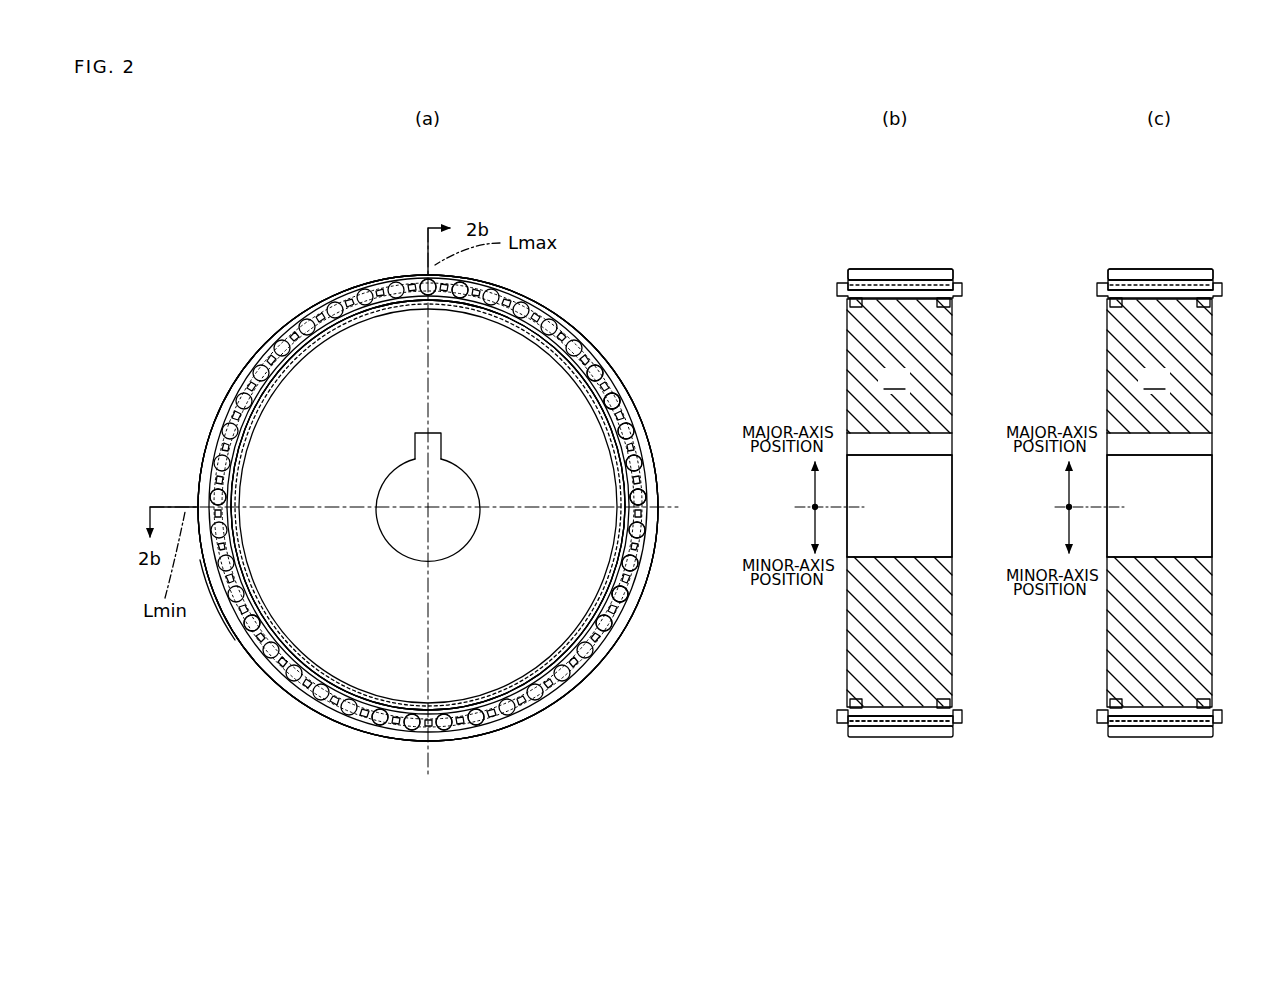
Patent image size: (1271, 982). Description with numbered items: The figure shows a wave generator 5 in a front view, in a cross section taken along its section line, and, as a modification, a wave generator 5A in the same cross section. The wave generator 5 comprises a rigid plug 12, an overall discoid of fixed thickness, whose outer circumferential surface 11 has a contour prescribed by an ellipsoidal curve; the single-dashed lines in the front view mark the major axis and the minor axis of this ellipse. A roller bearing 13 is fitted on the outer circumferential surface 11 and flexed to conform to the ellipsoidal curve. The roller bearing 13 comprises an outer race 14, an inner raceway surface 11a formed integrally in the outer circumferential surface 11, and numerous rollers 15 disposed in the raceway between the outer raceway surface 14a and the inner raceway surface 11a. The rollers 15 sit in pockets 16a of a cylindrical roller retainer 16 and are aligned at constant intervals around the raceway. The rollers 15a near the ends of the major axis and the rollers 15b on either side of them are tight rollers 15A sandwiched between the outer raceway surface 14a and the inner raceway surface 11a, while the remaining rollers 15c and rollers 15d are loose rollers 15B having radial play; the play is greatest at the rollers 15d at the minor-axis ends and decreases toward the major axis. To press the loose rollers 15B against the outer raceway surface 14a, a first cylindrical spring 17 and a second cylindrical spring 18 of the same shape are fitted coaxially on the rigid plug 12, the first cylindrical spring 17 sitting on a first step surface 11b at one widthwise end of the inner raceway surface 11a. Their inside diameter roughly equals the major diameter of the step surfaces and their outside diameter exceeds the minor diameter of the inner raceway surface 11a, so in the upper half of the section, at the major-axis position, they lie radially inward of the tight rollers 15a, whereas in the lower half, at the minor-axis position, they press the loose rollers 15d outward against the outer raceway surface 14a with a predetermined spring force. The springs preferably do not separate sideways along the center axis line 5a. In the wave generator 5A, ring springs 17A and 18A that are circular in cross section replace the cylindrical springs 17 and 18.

The wave generator 5 is at (266, 262).
The wave generator 5A is at (1117, 247).
The center axis line 5a is at (933, 520).
The outer circumferential surface 11 is at (186, 262).
The inner raceway surface 11a is at (307, 312).
The first step surface 11b is at (303, 343).
The rigid plug 12 is at (297, 392).
The roller bearing 13 is at (206, 403).
The outer race 14 is at (213, 433).
The outer raceway surface 14a is at (227, 588).
The rollers 15 is at (217, 463).
The rollers 15a is at (426, 283).
The rollers 15b is at (597, 373).
The rollers 15c is at (627, 594).
The rollers 15d is at (208, 492).
The tight rollers 15A is at (527, 803).
The loose rollers 15B is at (710, 395).
The roller retainer 16 is at (245, 388).
The pockets 16a is at (323, 314).
The first cylindrical spring 17 is at (262, 402).
The ring spring 17A is at (1111, 300).
The second cylindrical spring 18 is at (947, 302).
The ring spring 18A is at (1207, 302).